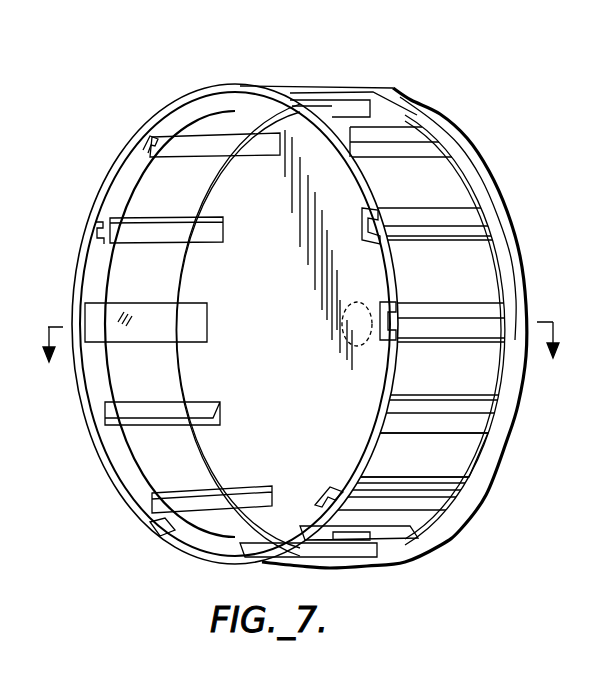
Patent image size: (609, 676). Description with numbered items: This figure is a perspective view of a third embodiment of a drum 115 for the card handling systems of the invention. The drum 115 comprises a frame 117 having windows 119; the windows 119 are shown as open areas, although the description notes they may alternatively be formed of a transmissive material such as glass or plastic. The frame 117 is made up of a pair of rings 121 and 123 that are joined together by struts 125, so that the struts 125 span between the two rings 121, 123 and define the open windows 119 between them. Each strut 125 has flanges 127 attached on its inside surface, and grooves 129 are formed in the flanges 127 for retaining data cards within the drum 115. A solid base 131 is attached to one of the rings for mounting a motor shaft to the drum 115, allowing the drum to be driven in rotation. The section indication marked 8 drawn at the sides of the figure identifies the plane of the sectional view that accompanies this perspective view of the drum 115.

The drum 115 is at (219, 71).
The frame 117 is at (513, 428).
The windows 119 is at (440, 453).
The ring 121 is at (392, 197).
The ring 123 is at (492, 201).
The struts 125 is at (335, 86).
The flanges 127 is at (196, 150).
The grooves 129 is at (84, 303).
The solid base 131 is at (270, 267).
The section line 8- 8 is at (300, 360).